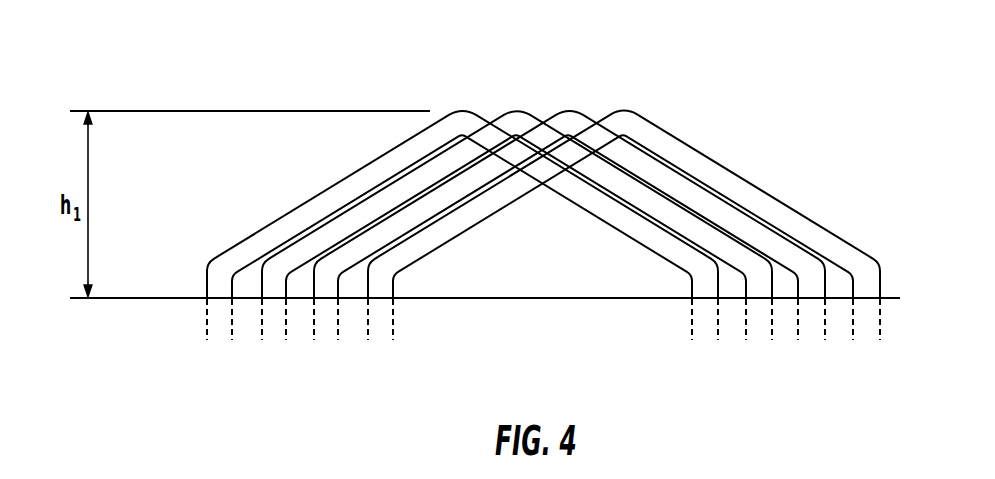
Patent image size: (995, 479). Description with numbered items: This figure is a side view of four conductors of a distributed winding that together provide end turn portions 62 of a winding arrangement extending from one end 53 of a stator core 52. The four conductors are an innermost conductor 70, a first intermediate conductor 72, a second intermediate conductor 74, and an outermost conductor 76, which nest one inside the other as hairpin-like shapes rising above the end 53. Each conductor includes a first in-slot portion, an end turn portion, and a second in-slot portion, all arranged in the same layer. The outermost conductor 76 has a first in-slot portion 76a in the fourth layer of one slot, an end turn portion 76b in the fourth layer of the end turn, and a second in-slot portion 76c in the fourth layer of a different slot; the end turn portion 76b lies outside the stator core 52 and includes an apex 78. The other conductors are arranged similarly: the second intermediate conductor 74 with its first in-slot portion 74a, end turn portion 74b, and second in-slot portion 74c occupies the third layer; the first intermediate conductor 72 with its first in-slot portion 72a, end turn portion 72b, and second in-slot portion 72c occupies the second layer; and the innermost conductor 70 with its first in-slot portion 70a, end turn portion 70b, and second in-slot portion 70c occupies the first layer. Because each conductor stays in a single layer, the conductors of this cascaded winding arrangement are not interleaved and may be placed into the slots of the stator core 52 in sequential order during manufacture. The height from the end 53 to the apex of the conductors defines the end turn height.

The stator core 52 is at (634, 340).
The end of the stator core 53 is at (545, 299).
The end turn portions 62 is at (775, 187).
The innermost conductor 70 is at (637, 118).
The first in-slot portion 70a is at (382, 327).
The end turn portion 70b is at (708, 167).
The second in-slot portion 70c is at (870, 333).
The first intermediate conductor 72 is at (573, 113).
The first in-slot portion 72a is at (325, 333).
The end turn portion 72b is at (662, 168).
The second in-slot portion 72c is at (817, 333).
The second intermediate conductor 74 is at (517, 113).
The first in-slot portion 74a is at (272, 333).
The end turn portion 74b is at (455, 155).
The second in-slot portion 74c is at (760, 333).
The outermost conductor 76 is at (453, 118).
The first in-slot portion 76a is at (217, 333).
The end turn portion 76b is at (396, 157).
The second in-slot portion 76c is at (702, 333).
The apex 78 is at (461, 126).